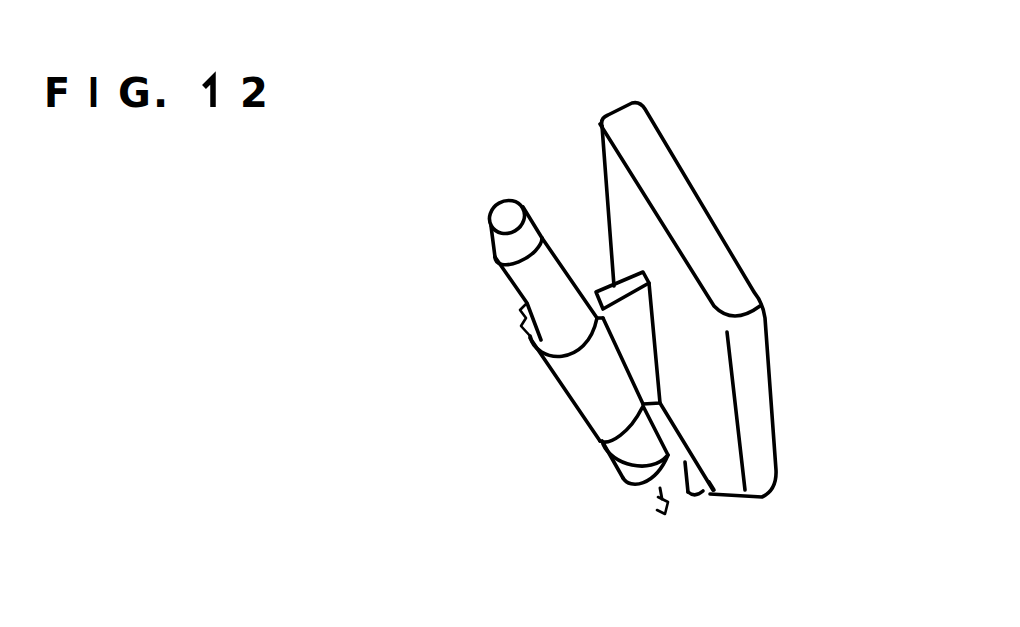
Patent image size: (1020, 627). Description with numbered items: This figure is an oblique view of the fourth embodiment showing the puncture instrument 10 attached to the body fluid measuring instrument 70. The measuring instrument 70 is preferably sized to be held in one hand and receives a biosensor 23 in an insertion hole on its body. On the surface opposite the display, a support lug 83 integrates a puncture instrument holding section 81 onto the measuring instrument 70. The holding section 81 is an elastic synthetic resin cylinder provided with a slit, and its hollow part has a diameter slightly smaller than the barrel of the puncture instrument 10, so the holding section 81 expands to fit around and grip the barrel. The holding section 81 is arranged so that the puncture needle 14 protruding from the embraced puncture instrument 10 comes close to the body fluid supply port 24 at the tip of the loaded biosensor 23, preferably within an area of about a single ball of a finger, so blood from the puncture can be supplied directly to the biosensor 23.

The puncture instrument 10 is at (538, 284).
The puncture needle 14 is at (648, 516).
The biosensor 23 is at (711, 494).
The body fluid supply port 24 is at (690, 497).
The body fluid measuring instrument 70 is at (698, 243).
The puncture instrument holding section 81 is at (587, 387).
The support lug 83 is at (597, 291).